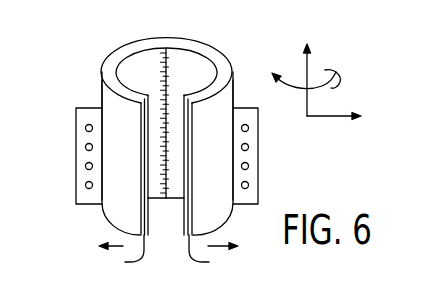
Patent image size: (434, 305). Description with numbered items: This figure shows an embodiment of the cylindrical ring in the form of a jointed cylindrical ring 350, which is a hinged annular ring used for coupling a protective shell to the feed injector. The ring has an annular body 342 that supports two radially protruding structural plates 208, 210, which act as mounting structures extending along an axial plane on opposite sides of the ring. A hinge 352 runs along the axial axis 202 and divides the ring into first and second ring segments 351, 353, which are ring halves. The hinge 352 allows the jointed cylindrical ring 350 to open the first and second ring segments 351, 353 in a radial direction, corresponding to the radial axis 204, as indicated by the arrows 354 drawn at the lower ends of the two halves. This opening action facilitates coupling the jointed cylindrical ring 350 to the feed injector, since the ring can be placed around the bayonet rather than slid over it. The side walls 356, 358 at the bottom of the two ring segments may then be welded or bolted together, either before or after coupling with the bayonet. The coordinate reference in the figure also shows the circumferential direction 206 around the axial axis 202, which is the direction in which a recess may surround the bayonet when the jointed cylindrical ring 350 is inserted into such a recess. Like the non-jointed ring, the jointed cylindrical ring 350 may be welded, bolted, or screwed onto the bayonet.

The jointed cylindrical ring 350 is at (127, 32).
The first ring segment 351 is at (106, 60).
The hinge 352 is at (170, 70).
The body 342 is at (102, 93).
The second ring segment 353 is at (233, 67).
The structural plate 208 is at (75, 148).
The structural plate 210 is at (259, 175).
The arrows 354 is at (115, 243).
The side wall 356 is at (125, 262).
The side wall 358 is at (209, 262).
The axial axis 202 is at (307, 78).
The radial axis 204 is at (333, 118).
The circumferential direction 206 is at (348, 83).